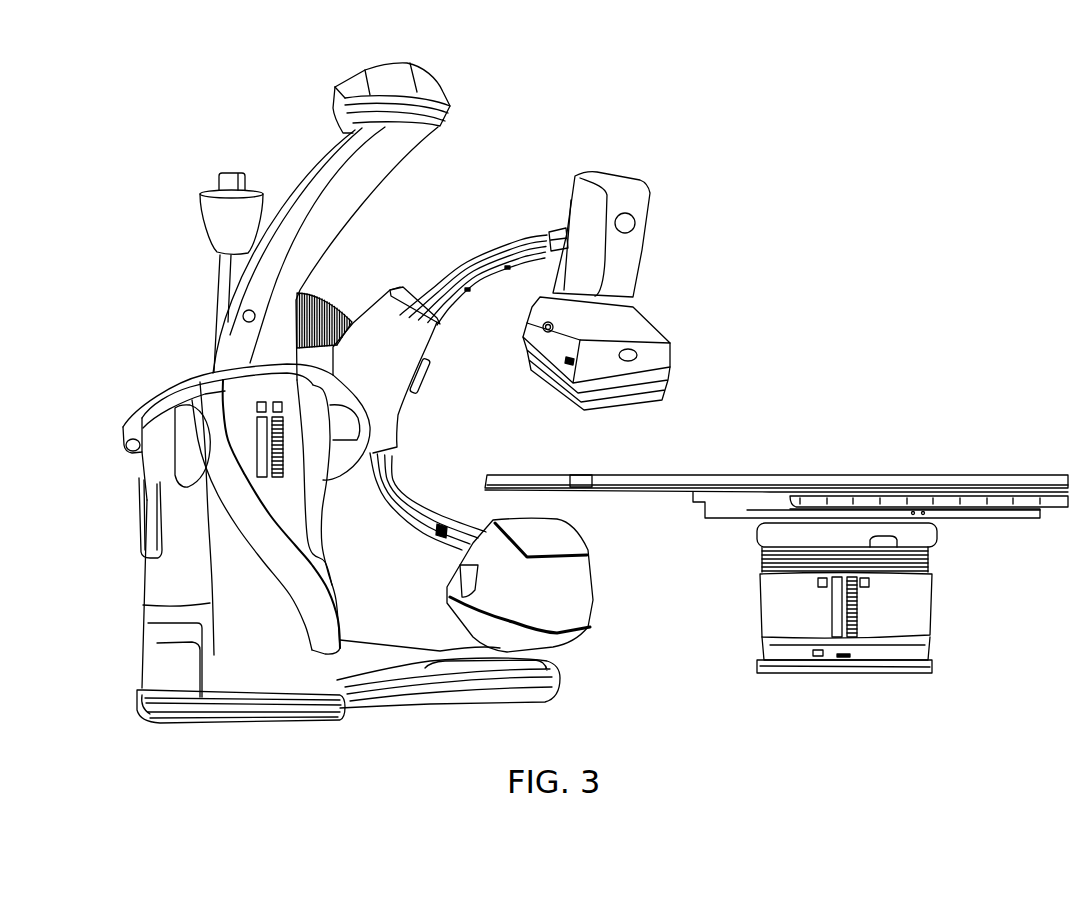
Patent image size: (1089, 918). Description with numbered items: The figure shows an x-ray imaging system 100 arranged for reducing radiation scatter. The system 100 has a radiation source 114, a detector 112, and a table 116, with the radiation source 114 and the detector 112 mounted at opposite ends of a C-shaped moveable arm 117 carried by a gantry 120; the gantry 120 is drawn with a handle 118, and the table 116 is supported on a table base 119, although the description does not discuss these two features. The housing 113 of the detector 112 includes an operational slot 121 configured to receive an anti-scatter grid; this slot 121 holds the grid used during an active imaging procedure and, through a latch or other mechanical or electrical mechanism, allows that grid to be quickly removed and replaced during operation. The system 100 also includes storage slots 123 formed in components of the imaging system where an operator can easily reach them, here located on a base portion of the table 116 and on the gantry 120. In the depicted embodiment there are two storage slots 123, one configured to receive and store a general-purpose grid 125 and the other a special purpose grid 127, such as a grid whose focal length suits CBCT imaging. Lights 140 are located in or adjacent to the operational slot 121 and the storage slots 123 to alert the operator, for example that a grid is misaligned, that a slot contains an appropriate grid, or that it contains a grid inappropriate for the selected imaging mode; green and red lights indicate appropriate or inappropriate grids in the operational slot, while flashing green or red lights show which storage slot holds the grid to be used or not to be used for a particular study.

The x-ray imaging system 100 is at (570, 376).
The detector 112 is at (603, 359).
The housing 113 is at (660, 209).
The radiation source 114 is at (570, 583).
The table 116 is at (897, 473).
The C-shaped moveable arm 117 is at (472, 250).
The handle 118 is at (141, 382).
The table base 119 is at (920, 600).
The gantry 120 is at (228, 587).
The operational slot 121 is at (540, 366).
The storage slots 123 is at (578, 566).
The general-purpose grid 125 is at (835, 640).
The special purpose grid 127 is at (857, 636).
The lights 140 is at (272, 398).